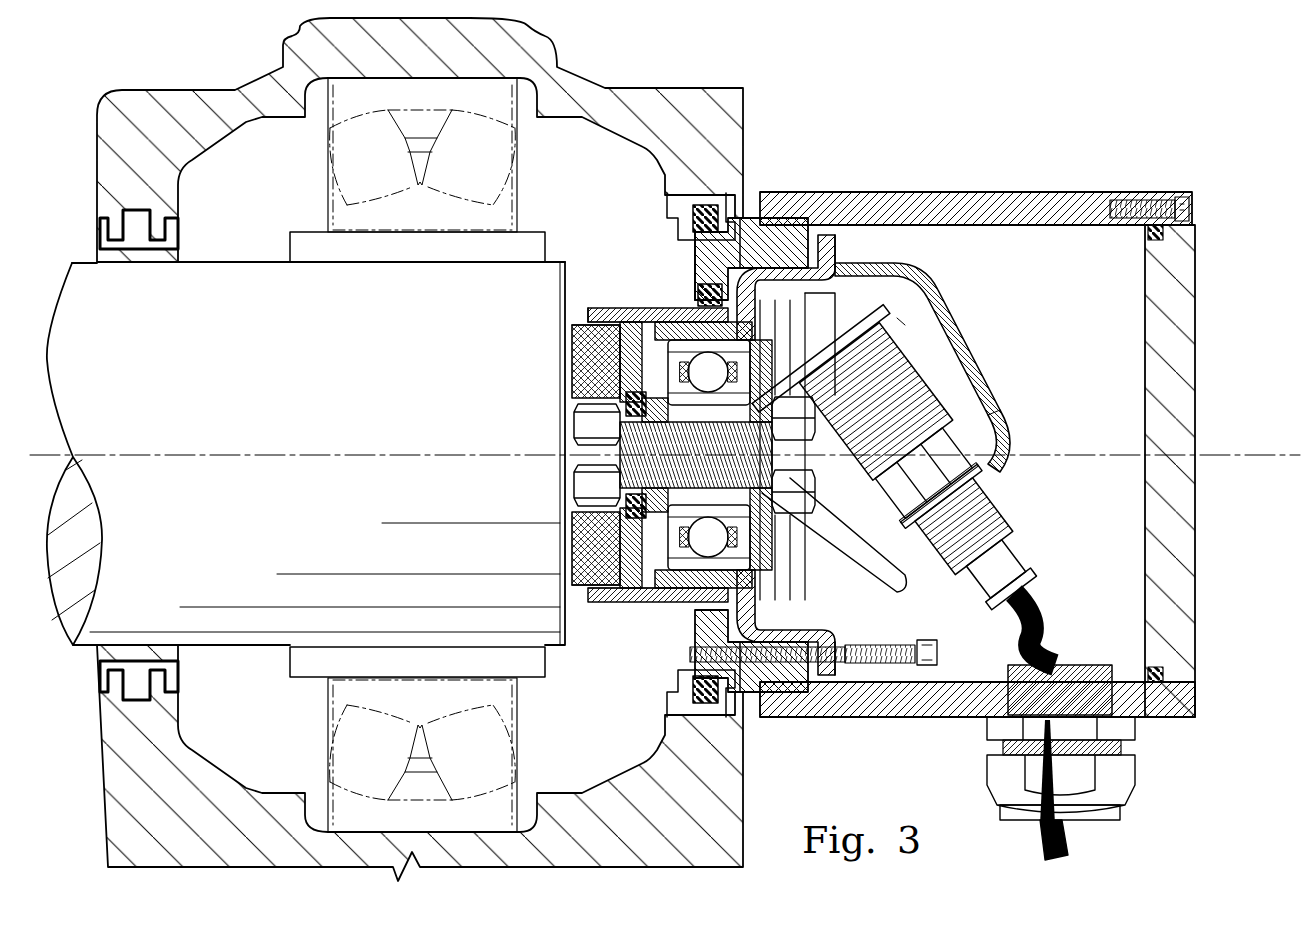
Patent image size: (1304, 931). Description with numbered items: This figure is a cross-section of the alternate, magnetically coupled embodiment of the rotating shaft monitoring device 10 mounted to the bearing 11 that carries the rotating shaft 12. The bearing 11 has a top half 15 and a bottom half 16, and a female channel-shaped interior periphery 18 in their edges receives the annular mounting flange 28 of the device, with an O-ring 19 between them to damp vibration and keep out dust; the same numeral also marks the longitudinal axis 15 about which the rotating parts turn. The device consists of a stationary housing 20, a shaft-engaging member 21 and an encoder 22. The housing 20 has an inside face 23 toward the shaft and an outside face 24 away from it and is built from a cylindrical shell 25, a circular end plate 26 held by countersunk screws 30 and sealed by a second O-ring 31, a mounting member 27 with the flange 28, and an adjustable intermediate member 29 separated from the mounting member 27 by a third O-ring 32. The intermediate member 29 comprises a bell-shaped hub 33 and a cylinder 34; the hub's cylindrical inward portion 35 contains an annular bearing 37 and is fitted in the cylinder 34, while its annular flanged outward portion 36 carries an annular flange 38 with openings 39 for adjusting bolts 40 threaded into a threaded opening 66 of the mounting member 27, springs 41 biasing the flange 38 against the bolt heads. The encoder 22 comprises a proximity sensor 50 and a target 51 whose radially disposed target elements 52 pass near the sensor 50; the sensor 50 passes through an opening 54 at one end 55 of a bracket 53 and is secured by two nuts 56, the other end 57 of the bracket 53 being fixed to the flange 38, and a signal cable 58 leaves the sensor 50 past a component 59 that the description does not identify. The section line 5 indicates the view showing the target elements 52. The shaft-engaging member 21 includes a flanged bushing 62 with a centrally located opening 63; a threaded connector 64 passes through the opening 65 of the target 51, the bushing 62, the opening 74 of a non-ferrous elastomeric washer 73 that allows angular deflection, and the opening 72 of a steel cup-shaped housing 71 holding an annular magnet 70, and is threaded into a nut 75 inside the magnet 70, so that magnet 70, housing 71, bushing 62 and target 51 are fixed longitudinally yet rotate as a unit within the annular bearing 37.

The section line 5- 5 is at (950, 218).
The monitoring device 10 is at (1095, 165).
The bearing 11 is at (752, 90).
The rotating shaft 12 is at (252, 265).
The top half of bearing / longitudinal axis 15 is at (105, 98).
The bottom half of bearing 16 is at (118, 818).
The channel-shaped interior periphery 18 is at (135, 212).
The O-ring 19 is at (690, 215).
The stationary housing 20 is at (1012, 205).
The shaft-engaging member 21 is at (565, 356).
The encoder 22 is at (1028, 496).
The inside face 23 is at (690, 250).
The outside face 24 is at (1016, 454).
The cylindrical shell 25 is at (880, 200).
The circular end plate 26 is at (1188, 338).
The mounting member 27 is at (755, 225).
The annular mounting flange 28 is at (700, 282).
The adjustable intermediate member 29 is at (602, 605).
The countersunk screws 30 is at (1195, 208).
The second O-ring 31 is at (1146, 232).
The third O-ring 32 is at (698, 300).
The bell-shaped hub 33 is at (818, 318).
The cylinder 34 is at (590, 312).
The cylindrical inward portion 35 is at (655, 322).
The annular flanged outward portion 36 is at (830, 245).
The annular bearing 37 is at (642, 310).
The annular flange 38 is at (840, 245).
The openings 39 is at (845, 648).
The adjusting bolts 40 is at (930, 640).
The springs 41 is at (888, 718).
The proximity sensor 50 is at (929, 485).
The target 51 is at (898, 320).
The target elements 52 is at (887, 318).
The bracket 53 is at (982, 337).
The opening 54 is at (966, 462).
The one end of bracket 55 is at (900, 542).
The nuts 56 is at (1010, 472).
The other end of bracket 57 is at (900, 268).
The signal cable 58 is at (1065, 628).
The cable gland 59 is at (1010, 665).
The flanged bushing 62 is at (662, 590).
The centrally located opening 63 is at (692, 592).
The threaded connector 64 is at (790, 398).
The centrally located opening 65 is at (790, 514).
The threaded opening 66 is at (795, 718).
The annular magnet 70 is at (572, 548).
The cup-shaped housing 71 is at (572, 330).
The centrally located opening 72 is at (620, 437).
The non-ferrous elastomeric washer 73 is at (572, 366).
The centrally located opening 74 is at (580, 420).
The nut 75 is at (580, 476).